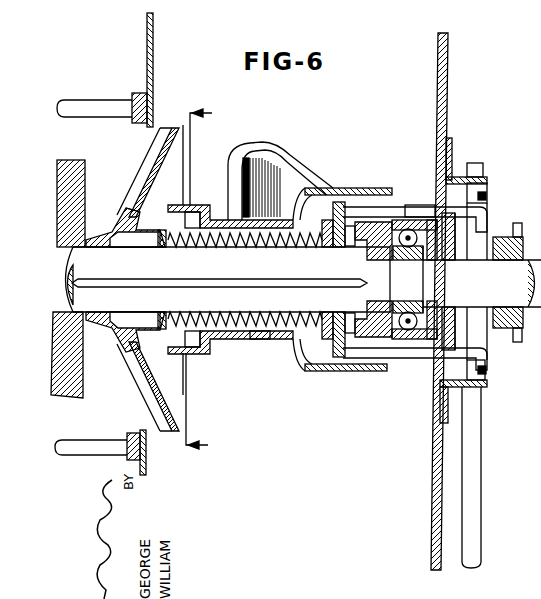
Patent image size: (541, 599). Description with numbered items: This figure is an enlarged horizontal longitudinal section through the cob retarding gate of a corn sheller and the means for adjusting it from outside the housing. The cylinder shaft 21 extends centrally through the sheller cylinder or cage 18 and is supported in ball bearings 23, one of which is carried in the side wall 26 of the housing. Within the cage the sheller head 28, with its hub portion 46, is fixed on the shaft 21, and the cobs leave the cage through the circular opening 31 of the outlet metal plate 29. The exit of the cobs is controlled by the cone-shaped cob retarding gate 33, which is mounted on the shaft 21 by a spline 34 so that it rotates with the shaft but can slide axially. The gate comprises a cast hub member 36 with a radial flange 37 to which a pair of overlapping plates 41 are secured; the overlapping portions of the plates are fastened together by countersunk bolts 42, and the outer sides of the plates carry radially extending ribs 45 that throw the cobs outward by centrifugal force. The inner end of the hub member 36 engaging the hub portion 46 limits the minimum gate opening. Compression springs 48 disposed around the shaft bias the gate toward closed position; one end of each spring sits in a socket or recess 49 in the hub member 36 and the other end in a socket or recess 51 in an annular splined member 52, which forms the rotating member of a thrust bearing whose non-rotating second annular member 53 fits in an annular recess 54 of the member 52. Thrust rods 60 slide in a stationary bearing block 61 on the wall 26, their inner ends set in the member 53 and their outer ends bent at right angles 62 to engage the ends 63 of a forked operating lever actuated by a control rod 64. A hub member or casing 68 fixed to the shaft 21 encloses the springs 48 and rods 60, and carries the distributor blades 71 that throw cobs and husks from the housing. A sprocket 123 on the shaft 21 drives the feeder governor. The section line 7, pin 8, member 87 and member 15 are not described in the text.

The side wall 26 is at (438, 90).
The control rod 64 is at (470, 500).
The thrust rods 60 is at (407, 212).
The stationary bearing block 61 is at (423, 205).
The right-angle bent ends 62 is at (488, 184).
The ends of forked operating lever 63 is at (490, 200).
The sprocket 123 is at (520, 236).
The ball bearings 23 is at (437, 243).
The second annular member 53 is at (360, 215).
The annular splined member 52 is at (337, 247).
The annular recess 54 is at (350, 232).
The compression springs 48 is at (280, 236).
The cob retarding gate 33 is at (172, 180).
The blades 71 is at (283, 162).
The socket or recess 51 is at (320, 212).
The overlapping plates 41 is at (175, 178).
The countersunk bolts 42 is at (204, 374).
The section line 7 is at (199, 281).
The radially extending ribs 45 is at (172, 128).
The hub member 36 is at (122, 213).
The radial flange 37 is at (130, 215).
The socket or recess 49 is at (173, 303).
The sheller head 28 is at (70, 150).
The hub portion 46 is at (70, 180).
The shaft 21 is at (450, 289).
The spline 34 is at (226, 262).
The hub member or casing 68 is at (258, 342).
The circular opening 31 is at (148, 128).
The metal plate 29 is at (150, 82).
The sheller cylinder or cage 18 is at (80, 452).
The pin 8 is at (94, 108).
The member 87 is at (540, 455).
The member 15 is at (540, 514).